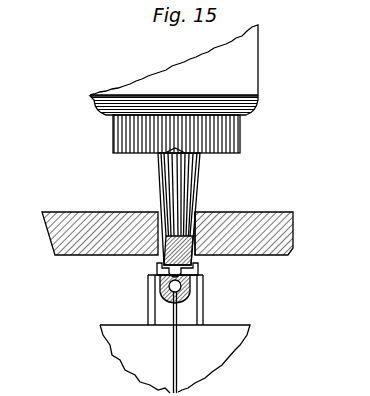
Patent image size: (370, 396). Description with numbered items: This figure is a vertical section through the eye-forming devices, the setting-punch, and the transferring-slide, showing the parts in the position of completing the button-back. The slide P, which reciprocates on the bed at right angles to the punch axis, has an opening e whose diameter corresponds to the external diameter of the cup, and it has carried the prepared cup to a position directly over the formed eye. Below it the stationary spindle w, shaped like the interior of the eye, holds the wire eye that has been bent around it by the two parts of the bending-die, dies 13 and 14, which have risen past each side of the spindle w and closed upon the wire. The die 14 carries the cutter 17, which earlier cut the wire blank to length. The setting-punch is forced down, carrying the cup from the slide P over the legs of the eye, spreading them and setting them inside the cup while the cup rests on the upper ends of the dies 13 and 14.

The slide P is at (167, 224).
The opening e is at (205, 214).
The cutter 17 is at (166, 274).
The bending-die 14 is at (175, 300).
The bending-die 13 is at (192, 300).
The spindle w is at (203, 287).